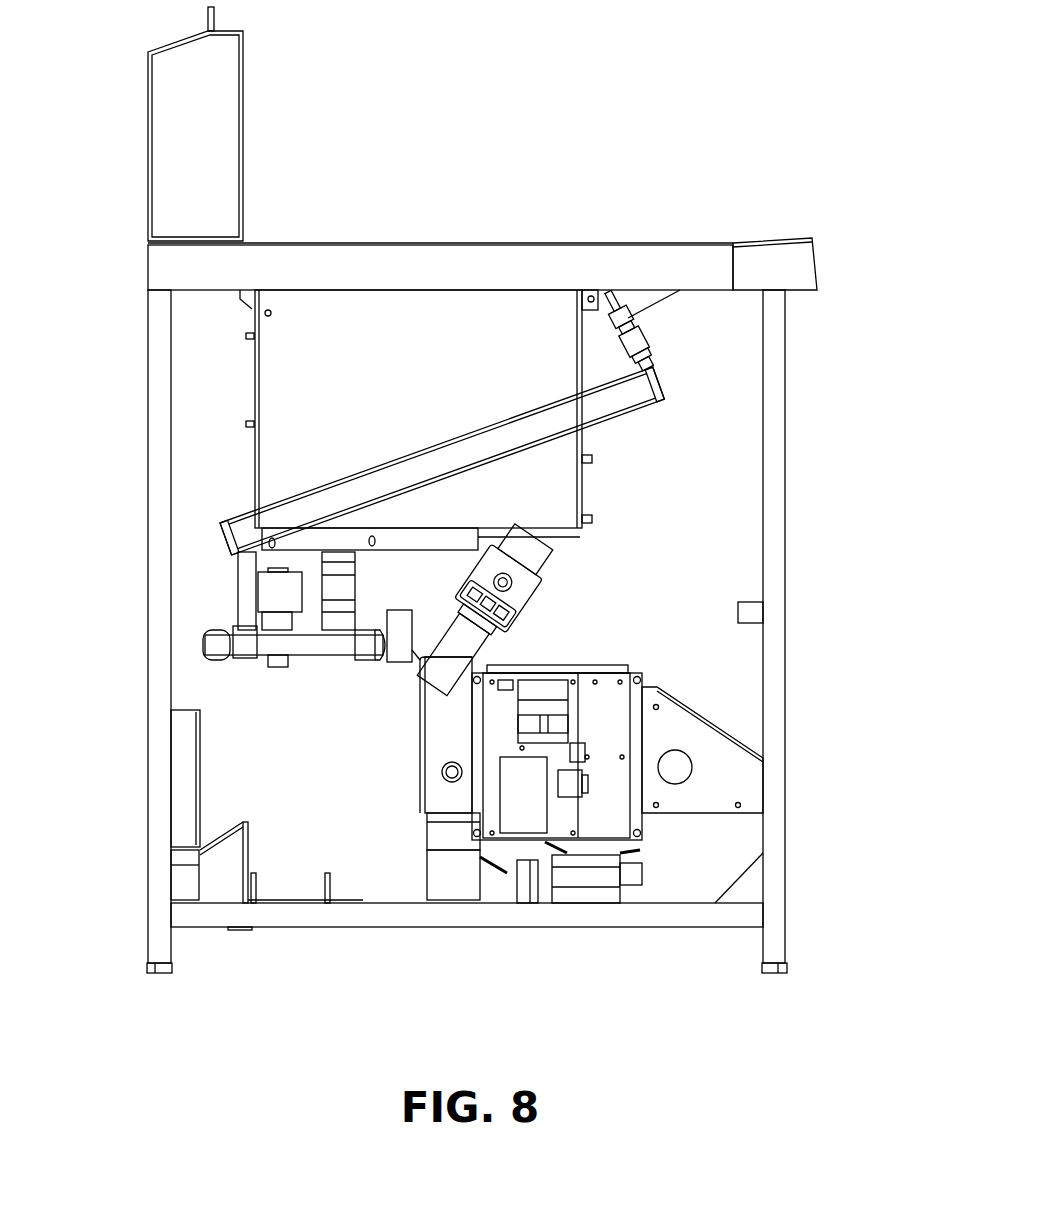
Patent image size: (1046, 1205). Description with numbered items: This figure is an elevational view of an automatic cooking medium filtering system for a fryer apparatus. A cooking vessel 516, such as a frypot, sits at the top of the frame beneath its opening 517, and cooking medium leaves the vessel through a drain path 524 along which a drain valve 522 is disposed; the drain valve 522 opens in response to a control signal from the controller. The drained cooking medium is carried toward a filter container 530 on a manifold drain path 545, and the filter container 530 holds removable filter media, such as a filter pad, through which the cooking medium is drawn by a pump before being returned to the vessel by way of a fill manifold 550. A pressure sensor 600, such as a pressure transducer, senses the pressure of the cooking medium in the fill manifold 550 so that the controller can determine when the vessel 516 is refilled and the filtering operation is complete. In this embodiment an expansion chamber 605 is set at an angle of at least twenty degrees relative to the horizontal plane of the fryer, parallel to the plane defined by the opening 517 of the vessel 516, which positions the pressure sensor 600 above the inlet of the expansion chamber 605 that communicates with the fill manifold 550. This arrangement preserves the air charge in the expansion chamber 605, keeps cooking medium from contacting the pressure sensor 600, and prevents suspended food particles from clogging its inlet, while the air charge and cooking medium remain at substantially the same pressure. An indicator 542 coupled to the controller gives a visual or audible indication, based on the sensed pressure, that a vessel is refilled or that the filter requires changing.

The opening 517 is at (487, 243).
The indicator 542 is at (818, 262).
The cooking vessel 516 is at (252, 380).
The pressure sensor 600 is at (642, 342).
The expansion chamber 605 is at (645, 403).
The drain path 524 is at (548, 548).
The drain valve 522 is at (547, 593).
The manifold drain path 545 is at (488, 653).
The fill manifold 550 is at (372, 655).
The filter container 530 is at (730, 737).